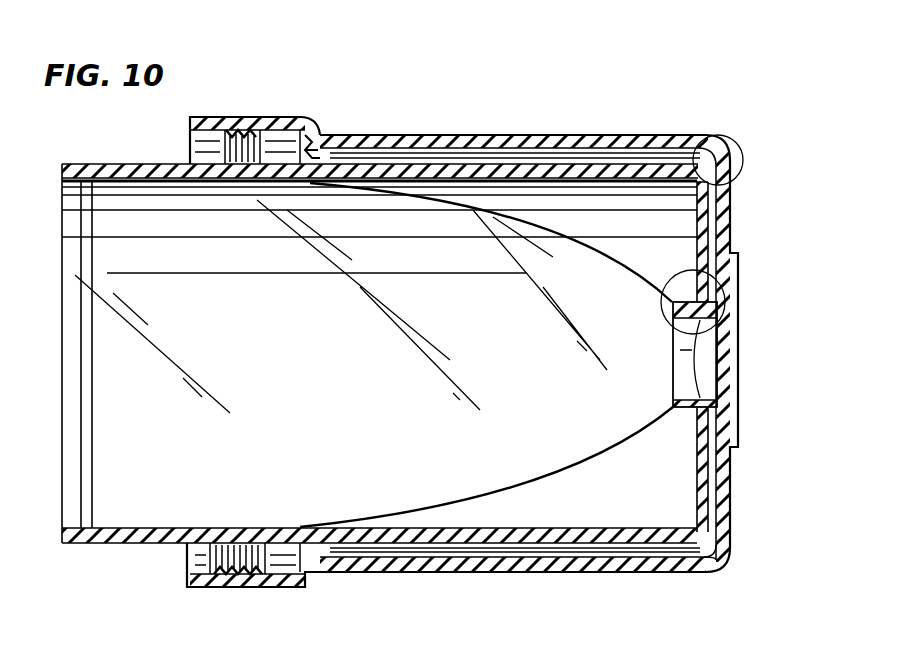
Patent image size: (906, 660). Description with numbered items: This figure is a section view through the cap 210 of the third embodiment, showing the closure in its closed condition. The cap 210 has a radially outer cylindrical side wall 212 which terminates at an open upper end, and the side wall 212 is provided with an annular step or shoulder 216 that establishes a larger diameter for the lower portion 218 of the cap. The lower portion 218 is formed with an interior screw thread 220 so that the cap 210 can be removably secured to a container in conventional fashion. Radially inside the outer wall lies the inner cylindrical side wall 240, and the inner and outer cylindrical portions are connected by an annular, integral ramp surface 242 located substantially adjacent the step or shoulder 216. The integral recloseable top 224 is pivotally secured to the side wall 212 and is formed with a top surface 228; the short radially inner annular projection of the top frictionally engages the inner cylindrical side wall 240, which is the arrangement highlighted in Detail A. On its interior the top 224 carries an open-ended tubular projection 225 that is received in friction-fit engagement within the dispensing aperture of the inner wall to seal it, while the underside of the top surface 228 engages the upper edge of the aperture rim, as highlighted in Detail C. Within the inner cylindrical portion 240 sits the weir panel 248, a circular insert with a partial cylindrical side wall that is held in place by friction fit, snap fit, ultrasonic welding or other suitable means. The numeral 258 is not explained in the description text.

The cap 210 is at (684, 86).
The radially outer cylindrical side wall 212 is at (446, 137).
The annular step or shoulder 216 is at (318, 140).
The lower portion 218 is at (284, 126).
The interior screw thread 220 is at (232, 130).
The recloseable top 224 is at (734, 247).
The tubular projection 225 is at (676, 410).
The top surface 228 is at (734, 492).
The inner cylindrical side wall 240 is at (108, 168).
The annular ramp surface 242 is at (346, 555).
The weir panel 248 is at (497, 478).
The annular ridge 258 is at (740, 402).
The Detail A is at (740, 166).
The Detail C is at (740, 306).